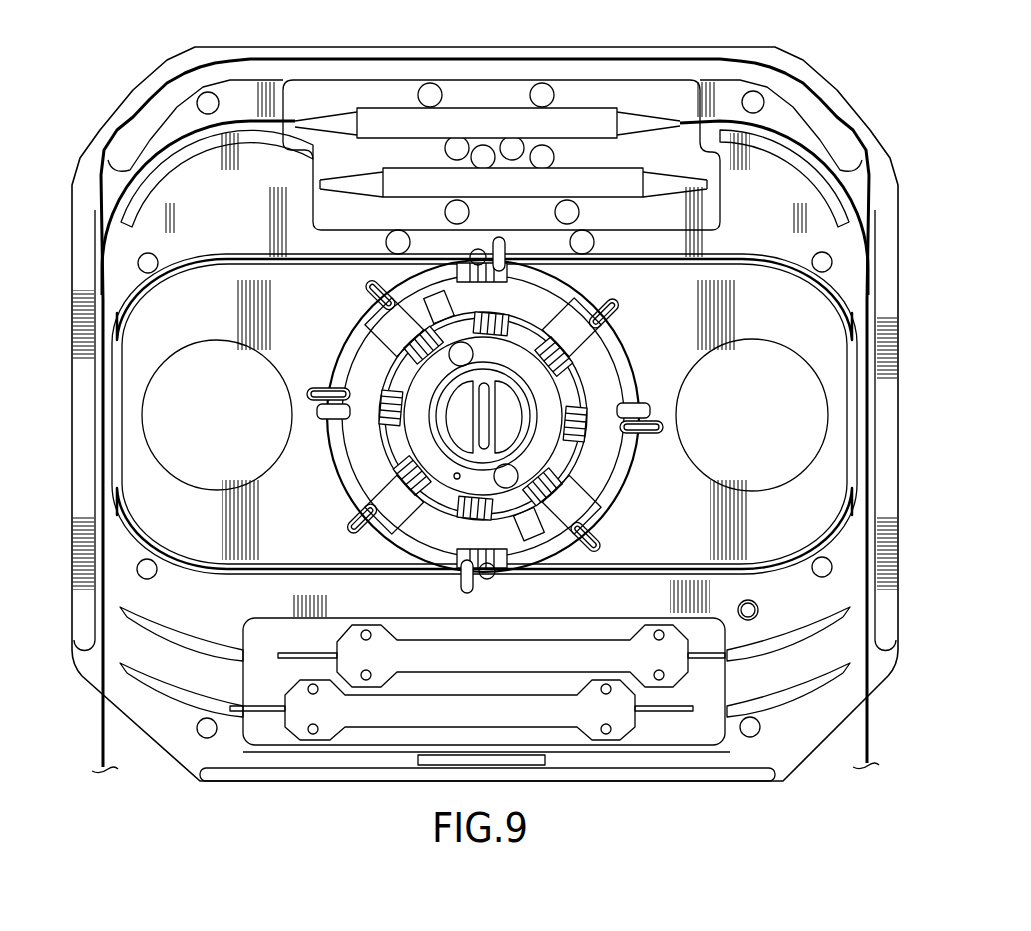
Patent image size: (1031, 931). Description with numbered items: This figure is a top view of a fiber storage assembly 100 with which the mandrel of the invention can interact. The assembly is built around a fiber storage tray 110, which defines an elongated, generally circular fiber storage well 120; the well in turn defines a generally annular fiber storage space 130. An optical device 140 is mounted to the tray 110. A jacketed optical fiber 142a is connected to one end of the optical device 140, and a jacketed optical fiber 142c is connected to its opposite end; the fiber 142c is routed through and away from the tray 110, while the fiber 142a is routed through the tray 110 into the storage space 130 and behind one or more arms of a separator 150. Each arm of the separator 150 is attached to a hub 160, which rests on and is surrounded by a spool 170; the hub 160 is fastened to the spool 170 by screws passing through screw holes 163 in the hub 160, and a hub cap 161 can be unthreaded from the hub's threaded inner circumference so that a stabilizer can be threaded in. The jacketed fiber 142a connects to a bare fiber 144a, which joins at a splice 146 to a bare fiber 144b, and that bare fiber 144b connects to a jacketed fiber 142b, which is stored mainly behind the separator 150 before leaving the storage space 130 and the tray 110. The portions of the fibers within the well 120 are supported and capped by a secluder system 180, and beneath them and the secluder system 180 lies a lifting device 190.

The fiber storage assembly 100 is at (938, 430).
The fiber storage tray 110 is at (908, 545).
The fiber storage well 120 is at (654, 397).
The fiber storage space 130 is at (588, 500).
The optical device 140 is at (590, 114).
The jacketed optical fiber 142a is at (242, 112).
The jacketed optical fiber 142b is at (530, 247).
The jacketed optical fiber 142c is at (805, 132).
The bare fiber 144a is at (352, 340).
The bare fiber 144b is at (335, 380).
The splice 146 is at (352, 364).
The separator 150 is at (603, 542).
The hub 160 is at (578, 456).
The hub cap 161 is at (442, 426).
The screw holes 163 is at (470, 478).
The spool 170 is at (562, 453).
The secluder system 180 is at (640, 348).
The lifting device 190 is at (604, 293).